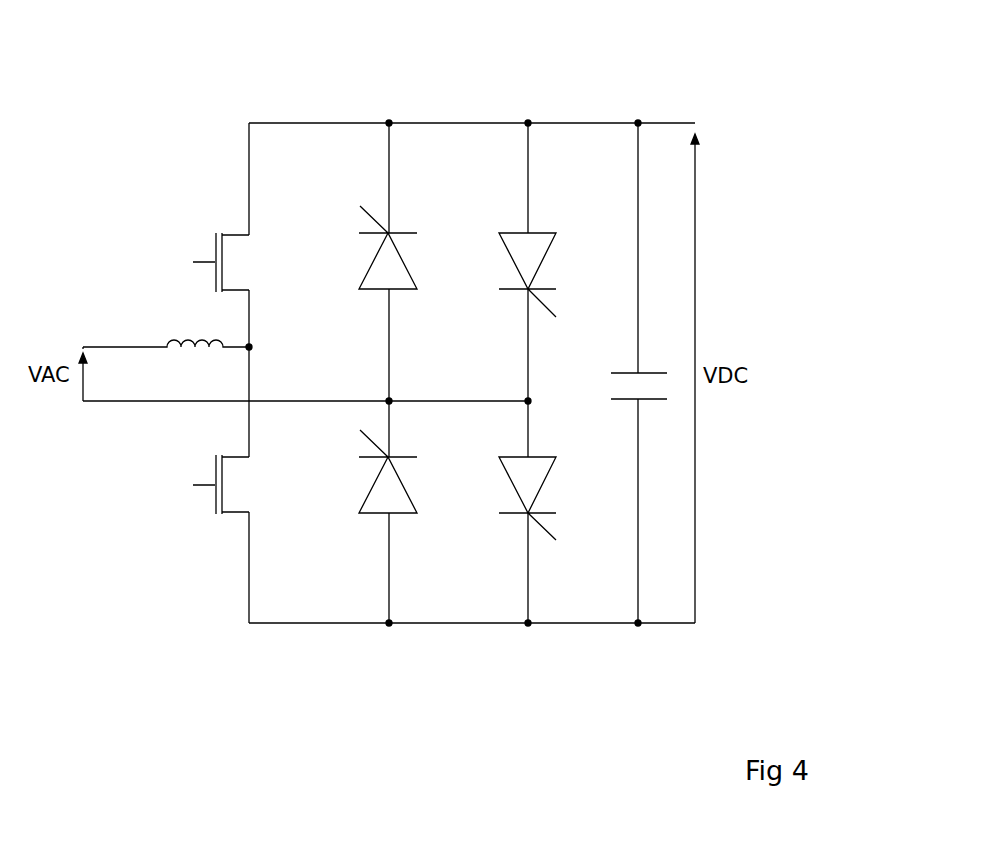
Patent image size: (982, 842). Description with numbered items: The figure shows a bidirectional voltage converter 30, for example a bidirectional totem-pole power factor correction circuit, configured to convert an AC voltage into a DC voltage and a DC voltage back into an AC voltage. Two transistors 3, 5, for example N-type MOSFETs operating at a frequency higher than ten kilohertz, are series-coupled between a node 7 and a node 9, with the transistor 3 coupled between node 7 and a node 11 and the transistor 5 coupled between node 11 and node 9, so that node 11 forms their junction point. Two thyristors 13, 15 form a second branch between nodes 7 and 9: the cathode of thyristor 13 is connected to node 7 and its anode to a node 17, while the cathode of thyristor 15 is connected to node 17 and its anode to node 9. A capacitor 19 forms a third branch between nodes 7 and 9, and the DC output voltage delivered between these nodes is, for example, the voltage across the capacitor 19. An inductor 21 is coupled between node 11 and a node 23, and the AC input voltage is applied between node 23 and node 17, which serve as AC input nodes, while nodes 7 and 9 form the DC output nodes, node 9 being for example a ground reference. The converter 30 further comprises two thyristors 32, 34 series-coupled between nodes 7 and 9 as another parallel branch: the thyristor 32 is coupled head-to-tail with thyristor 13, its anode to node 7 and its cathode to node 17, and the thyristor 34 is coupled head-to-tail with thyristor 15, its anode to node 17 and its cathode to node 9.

The transistor 3 is at (234, 234).
The transistor 5 is at (233, 514).
The node 7 is at (528, 121).
The node 9 is at (528, 625).
The node 11 is at (252, 346).
The thyristor 13 is at (405, 265).
The thyristor 15 is at (404, 484).
The node 17 is at (391, 400).
The capacitor 19 is at (655, 373).
The inductor 21 is at (170, 338).
The node 23 is at (83, 344).
The voltage converter 30 is at (768, 123).
The thyristor 32 is at (545, 258).
The thyristor 34 is at (540, 457).